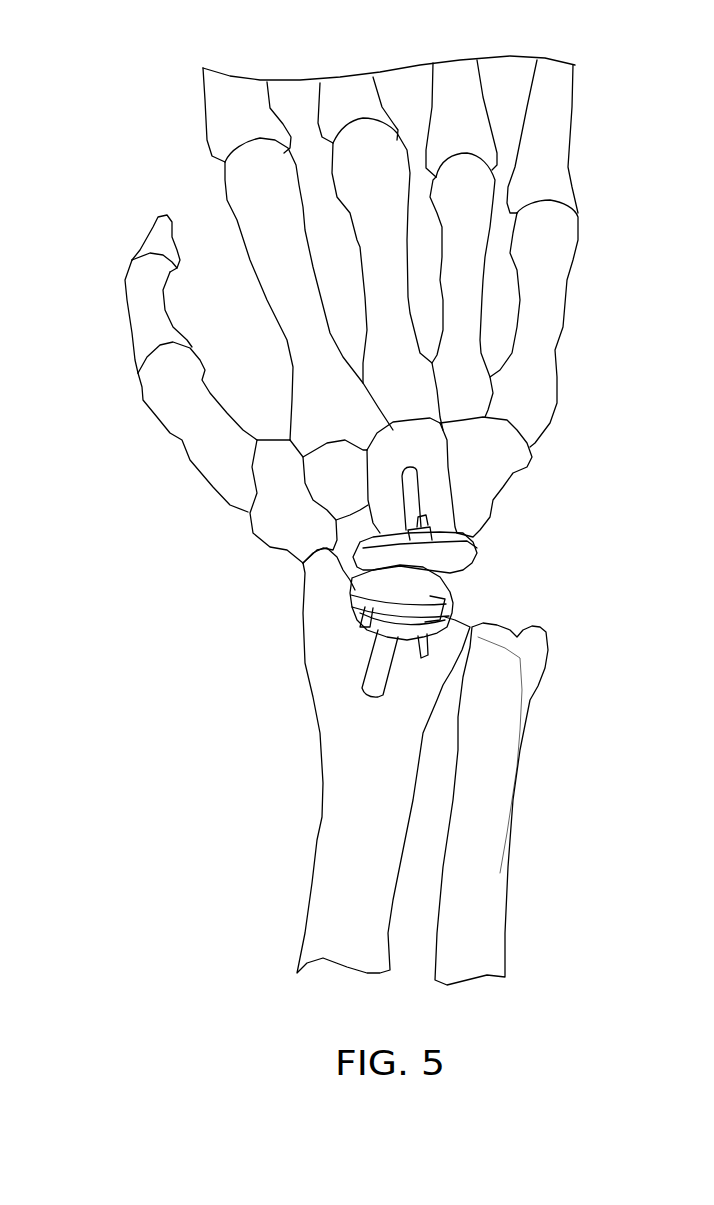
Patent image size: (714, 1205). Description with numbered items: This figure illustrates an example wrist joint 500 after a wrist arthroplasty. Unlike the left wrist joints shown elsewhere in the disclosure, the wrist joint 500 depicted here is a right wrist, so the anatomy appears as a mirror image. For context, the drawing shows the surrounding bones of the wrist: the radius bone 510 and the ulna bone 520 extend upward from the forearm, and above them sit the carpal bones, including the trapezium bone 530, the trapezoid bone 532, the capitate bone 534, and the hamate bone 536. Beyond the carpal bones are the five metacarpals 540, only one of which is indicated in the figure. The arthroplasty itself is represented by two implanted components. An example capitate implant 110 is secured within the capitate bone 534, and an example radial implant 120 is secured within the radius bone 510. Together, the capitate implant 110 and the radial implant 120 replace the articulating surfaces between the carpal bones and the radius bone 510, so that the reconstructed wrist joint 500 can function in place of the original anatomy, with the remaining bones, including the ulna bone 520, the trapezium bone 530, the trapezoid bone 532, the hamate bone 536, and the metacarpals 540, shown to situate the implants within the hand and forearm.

The wrist joint 500 is at (108, 97).
The radius bone 510 is at (320, 897).
The ulna bone 520 is at (493, 907).
The trapezium bone 530 is at (257, 520).
The trapezoid bone 532 is at (345, 463).
The capitate bone 534 is at (413, 430).
The hamate bone 536 is at (517, 460).
The metacarpals 540 is at (548, 347).
The capitate implant 110 is at (465, 552).
The radial implant 120 is at (455, 591).